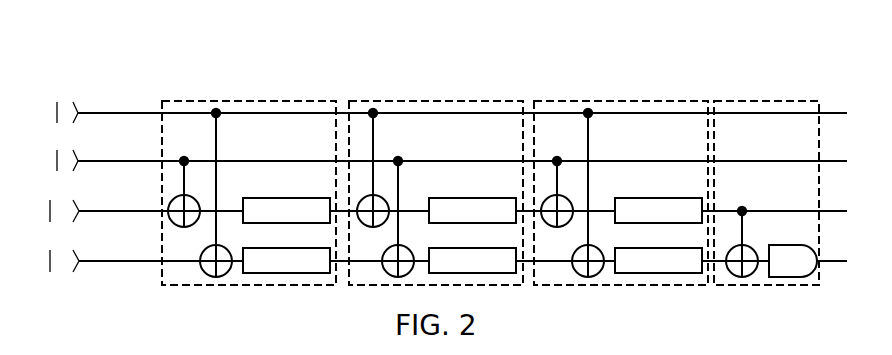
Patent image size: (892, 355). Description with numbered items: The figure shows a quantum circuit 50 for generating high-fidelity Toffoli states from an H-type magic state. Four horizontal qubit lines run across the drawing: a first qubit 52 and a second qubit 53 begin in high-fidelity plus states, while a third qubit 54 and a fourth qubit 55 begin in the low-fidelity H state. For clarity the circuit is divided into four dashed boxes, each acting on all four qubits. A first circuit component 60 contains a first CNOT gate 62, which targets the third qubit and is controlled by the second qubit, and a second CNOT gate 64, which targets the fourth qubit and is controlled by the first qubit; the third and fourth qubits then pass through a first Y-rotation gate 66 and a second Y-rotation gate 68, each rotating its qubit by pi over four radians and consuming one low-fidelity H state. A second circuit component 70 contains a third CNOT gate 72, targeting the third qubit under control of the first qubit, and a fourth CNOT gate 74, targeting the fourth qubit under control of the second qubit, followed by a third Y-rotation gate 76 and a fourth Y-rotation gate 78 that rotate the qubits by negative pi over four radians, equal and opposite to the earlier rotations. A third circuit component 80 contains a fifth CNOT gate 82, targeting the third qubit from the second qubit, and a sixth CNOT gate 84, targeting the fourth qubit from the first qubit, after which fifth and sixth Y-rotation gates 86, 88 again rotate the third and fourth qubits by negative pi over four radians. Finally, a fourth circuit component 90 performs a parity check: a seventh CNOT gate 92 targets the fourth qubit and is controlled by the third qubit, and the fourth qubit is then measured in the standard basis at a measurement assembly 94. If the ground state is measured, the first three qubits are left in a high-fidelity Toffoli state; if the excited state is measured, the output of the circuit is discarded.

The quantum circuit 50 is at (740, 45).
The first qubit 52 is at (148, 110).
The second qubit 53 is at (148, 158).
The third qubit 54 is at (148, 208).
The fourth qubit 55 is at (148, 260).
The first circuit component 60 is at (248, 97).
The first CNOT gate 62 is at (190, 198).
The second CNOT gate 64 is at (215, 142).
The first Y-rotation gate 66 is at (265, 198).
The second Y-rotation gate 68 is at (265, 248).
The second circuit component 70 is at (434, 97).
The third CNOT gate 72 is at (373, 142).
The fourth CNOT gate 74 is at (398, 185).
The third Y-rotation gate 76 is at (453, 198).
The fourth Y-rotation gate 78 is at (453, 248).
The third circuit component 80 is at (620, 97).
The fifth CNOT gate 82 is at (563, 198).
The sixth CNOT gate 84 is at (588, 142).
The fifth Y-rotation gate 86 is at (632, 198).
The sixth Y-rotation gate 88 is at (632, 248).
The fourth circuit component 90 is at (767, 97).
The seventh CNOT gate 92 is at (742, 207).
The measurement assembly 94 is at (775, 245).